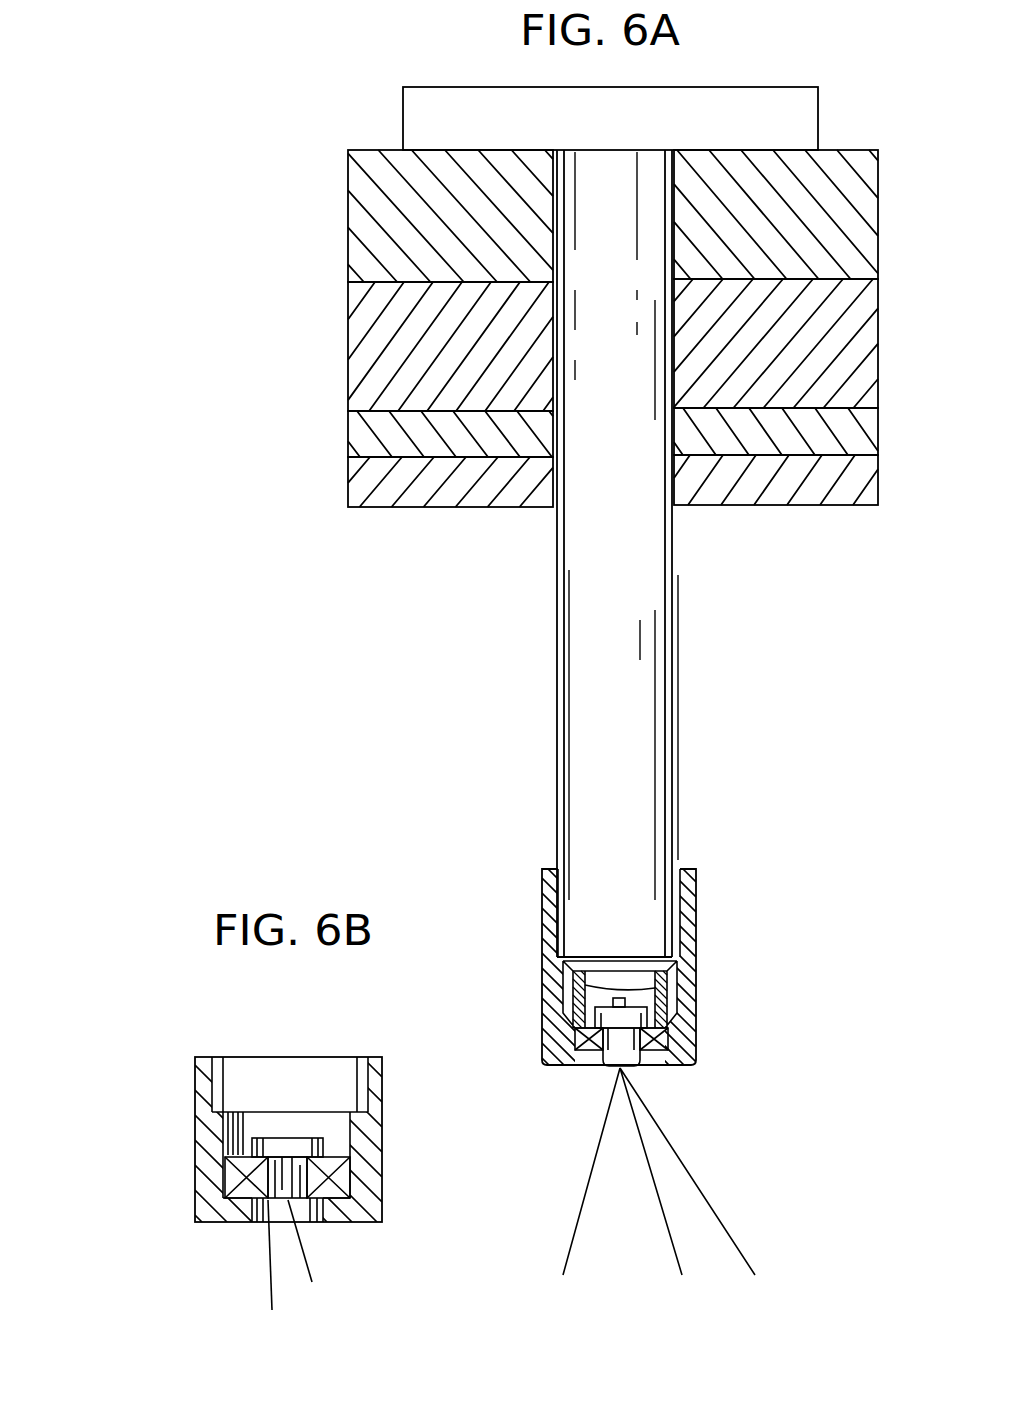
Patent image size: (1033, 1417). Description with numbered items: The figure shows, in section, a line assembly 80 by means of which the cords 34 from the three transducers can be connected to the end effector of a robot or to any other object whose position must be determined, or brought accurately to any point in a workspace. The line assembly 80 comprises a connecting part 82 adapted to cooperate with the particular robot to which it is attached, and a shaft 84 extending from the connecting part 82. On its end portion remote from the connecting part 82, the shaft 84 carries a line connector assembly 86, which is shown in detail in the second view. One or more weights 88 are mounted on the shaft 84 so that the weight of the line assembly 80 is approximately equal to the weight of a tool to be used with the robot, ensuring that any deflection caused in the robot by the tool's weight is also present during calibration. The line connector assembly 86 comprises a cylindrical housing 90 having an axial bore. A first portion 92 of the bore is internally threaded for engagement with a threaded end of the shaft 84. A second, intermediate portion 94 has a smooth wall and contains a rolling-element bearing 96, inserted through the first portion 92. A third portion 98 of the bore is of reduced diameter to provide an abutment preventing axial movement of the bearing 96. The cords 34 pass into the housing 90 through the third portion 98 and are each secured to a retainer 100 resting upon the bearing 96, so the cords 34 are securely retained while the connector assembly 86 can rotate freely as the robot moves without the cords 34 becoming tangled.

In FIG. 6A, the line assembly 80 is at (306, 510).
In FIG. 6A, the connecting part 82 is at (403, 112).
In FIG. 6A, the shaft 84 is at (677, 683).
In FIG. 6A, the line connector assembly 86 is at (718, 1018).
In FIG. 6B, the line connector assembly 86 is at (365, 1045).
In FIG. 6A, the weights 88 is at (349, 300).
In FIG. 6A, the cords 34 is at (586, 1190).
In FIG. 6B, the cords 34 is at (303, 1248).
In FIG. 6B, the cylindrical housing 90 is at (195, 1097).
In FIG. 6B, the first portion 92 is at (222, 1080).
In FIG. 6B, the second, intermediate portion 94 is at (347, 1130).
In FIG. 6B, the rolling-element bearing 96 is at (228, 1150).
In FIG. 6B, the third portion 98 is at (272, 1310).
In FIG. 6B, the retainer 100 is at (290, 1138).